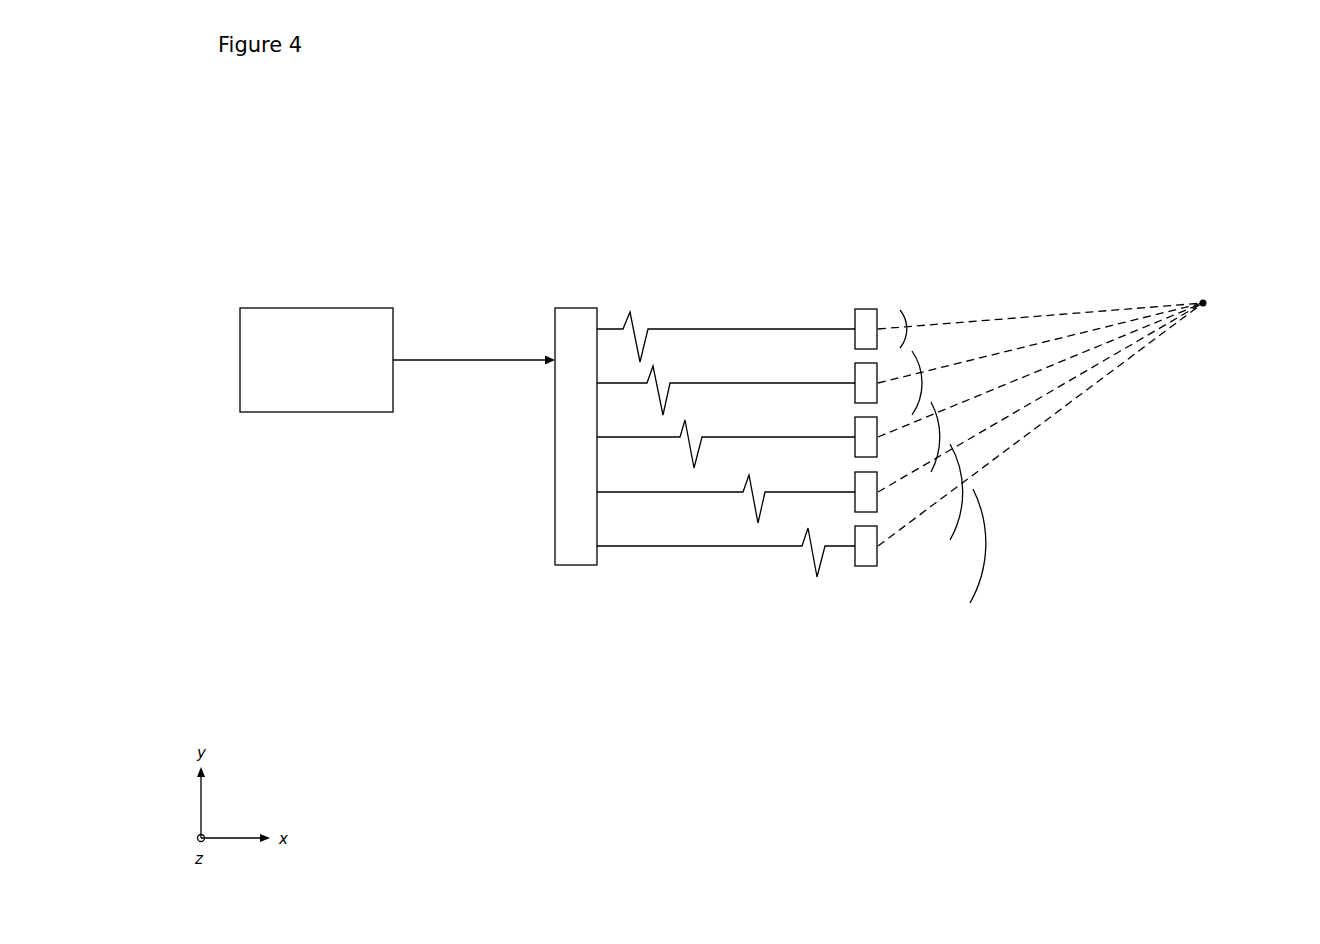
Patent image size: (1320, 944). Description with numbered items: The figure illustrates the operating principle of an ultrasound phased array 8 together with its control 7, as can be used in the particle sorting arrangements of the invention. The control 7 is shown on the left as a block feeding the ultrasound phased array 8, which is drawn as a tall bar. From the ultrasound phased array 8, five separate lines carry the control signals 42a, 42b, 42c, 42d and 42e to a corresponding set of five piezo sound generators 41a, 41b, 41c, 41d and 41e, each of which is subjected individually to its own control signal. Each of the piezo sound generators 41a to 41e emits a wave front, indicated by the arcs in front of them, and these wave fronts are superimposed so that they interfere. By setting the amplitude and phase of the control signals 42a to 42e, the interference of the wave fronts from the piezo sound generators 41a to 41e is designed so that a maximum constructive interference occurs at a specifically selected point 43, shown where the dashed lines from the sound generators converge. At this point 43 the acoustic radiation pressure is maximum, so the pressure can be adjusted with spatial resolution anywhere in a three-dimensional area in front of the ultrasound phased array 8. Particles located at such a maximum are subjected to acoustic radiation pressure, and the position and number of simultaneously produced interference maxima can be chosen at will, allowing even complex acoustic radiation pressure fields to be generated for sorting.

The control 7 is at (307, 330).
The ultrasound phased array 8 is at (577, 320).
The control signal 42a is at (713, 329).
The control signal 42b is at (718, 383).
The control signal 42c is at (723, 437).
The control signal 42d is at (782, 492).
The control signal 42e is at (652, 547).
The piezo sound generator 41a is at (865, 322).
The piezo sound generator 41b is at (865, 390).
The piezo sound generator 41c is at (863, 430).
The piezo sound generator 41d is at (863, 490).
The piezo sound generator 41e is at (863, 555).
The point of maximum constructive interference 43 is at (1203, 303).